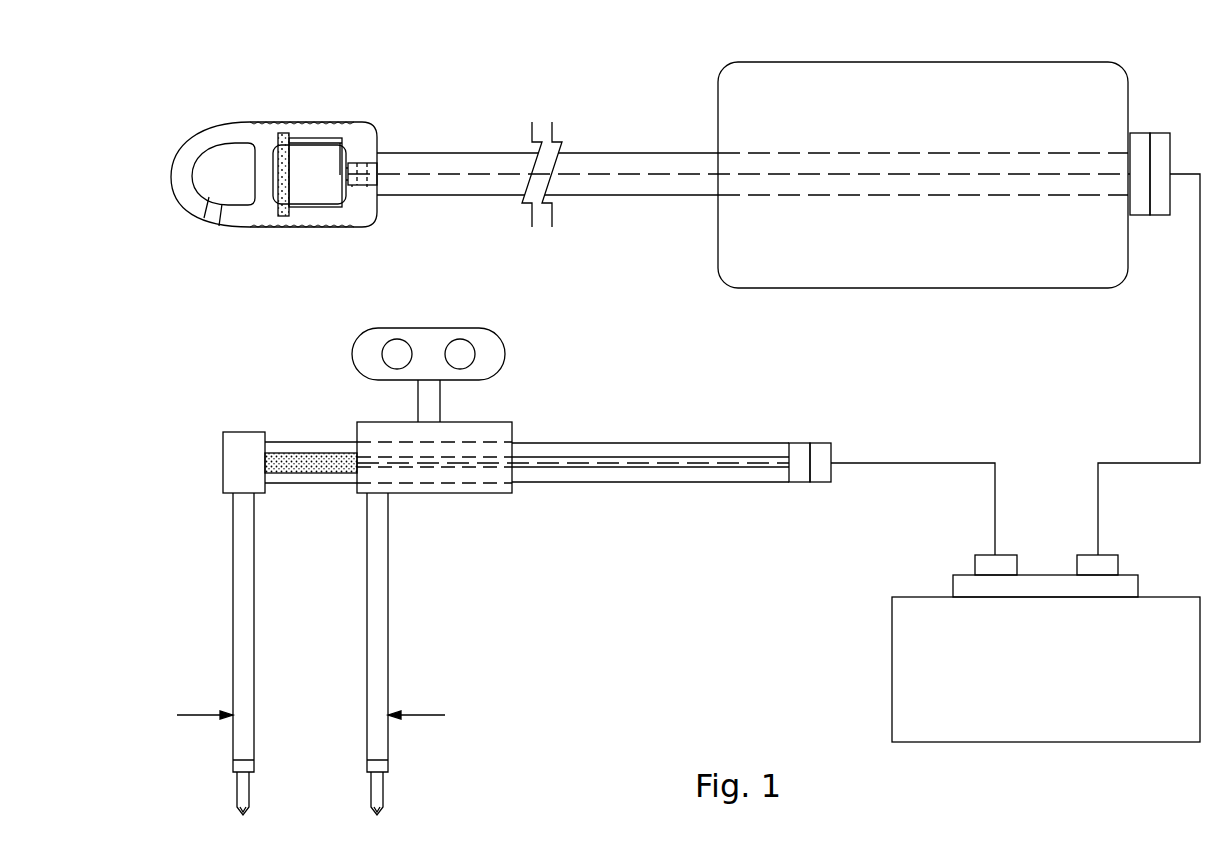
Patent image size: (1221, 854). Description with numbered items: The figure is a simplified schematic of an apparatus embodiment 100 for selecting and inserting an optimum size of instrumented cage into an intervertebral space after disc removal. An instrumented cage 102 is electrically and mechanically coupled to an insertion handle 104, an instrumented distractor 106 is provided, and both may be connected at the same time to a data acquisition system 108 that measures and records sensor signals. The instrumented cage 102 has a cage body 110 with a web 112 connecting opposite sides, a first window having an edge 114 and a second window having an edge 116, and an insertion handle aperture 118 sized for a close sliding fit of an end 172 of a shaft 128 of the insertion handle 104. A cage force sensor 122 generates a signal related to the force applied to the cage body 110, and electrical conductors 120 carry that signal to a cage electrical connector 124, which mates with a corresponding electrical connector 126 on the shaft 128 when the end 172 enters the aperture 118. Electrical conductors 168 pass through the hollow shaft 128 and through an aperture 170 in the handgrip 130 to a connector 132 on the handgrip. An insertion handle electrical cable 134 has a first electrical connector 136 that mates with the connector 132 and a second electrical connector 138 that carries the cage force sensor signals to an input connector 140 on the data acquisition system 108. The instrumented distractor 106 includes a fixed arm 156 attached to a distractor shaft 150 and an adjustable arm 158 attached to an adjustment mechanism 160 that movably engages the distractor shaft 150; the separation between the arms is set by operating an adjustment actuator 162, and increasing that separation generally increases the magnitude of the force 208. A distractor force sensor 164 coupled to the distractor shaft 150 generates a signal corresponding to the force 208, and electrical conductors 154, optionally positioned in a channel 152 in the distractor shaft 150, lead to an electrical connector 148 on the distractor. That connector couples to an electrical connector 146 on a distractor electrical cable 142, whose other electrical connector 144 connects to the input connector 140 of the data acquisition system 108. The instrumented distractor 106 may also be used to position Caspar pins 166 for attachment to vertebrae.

The apparatus embodiment 100 is at (606, 668).
The instrumented cage 102 is at (373, 76).
The insertion handle 104 is at (660, 70).
The instrumented distractor 106 is at (590, 366).
The data acquisition system 108 is at (1188, 730).
The cage body 110 is at (198, 138).
The web 112 is at (250, 177).
The edge of first window 114 is at (208, 212).
The edge of second window 116 is at (337, 208).
The insertion handle aperture 118 is at (356, 163).
The electrical conductors 120 is at (330, 140).
The cage force sensor 122 is at (287, 133).
The cage electrical connector 124 is at (353, 187).
The electrical connector 126 is at (368, 187).
The shaft 128 is at (653, 152).
The handgrip 130 is at (855, 62).
The connector 132 is at (1140, 133).
The insertion handle electrical cable 134 is at (1155, 463).
The first electrical connector 136 is at (1160, 133).
The second electrical connector 138 is at (1108, 555).
The input connector 140 is at (953, 575).
The distractor electrical cable 142 is at (915, 463).
The electrical connector 144 is at (1005, 555).
The electrical connector 146 is at (820, 482).
The electrical connector 148 is at (800, 443).
The distractor shaft 150 is at (665, 443).
The channel 152 is at (693, 470).
The electrical conductors 154 is at (614, 467).
The fixed arm 156 is at (252, 605).
The adjustable arm 158 is at (388, 605).
The adjustment mechanism 160 is at (418, 495).
The adjustment actuator 162 is at (480, 328).
The distractor force sensor 164 is at (315, 452).
The Caspar pins 166 is at (249, 782).
The electrical conductors 168 is at (513, 173).
The aperture 170 is at (1075, 152).
The end of shaft 172 is at (372, 187).
The force 208 is at (423, 713).